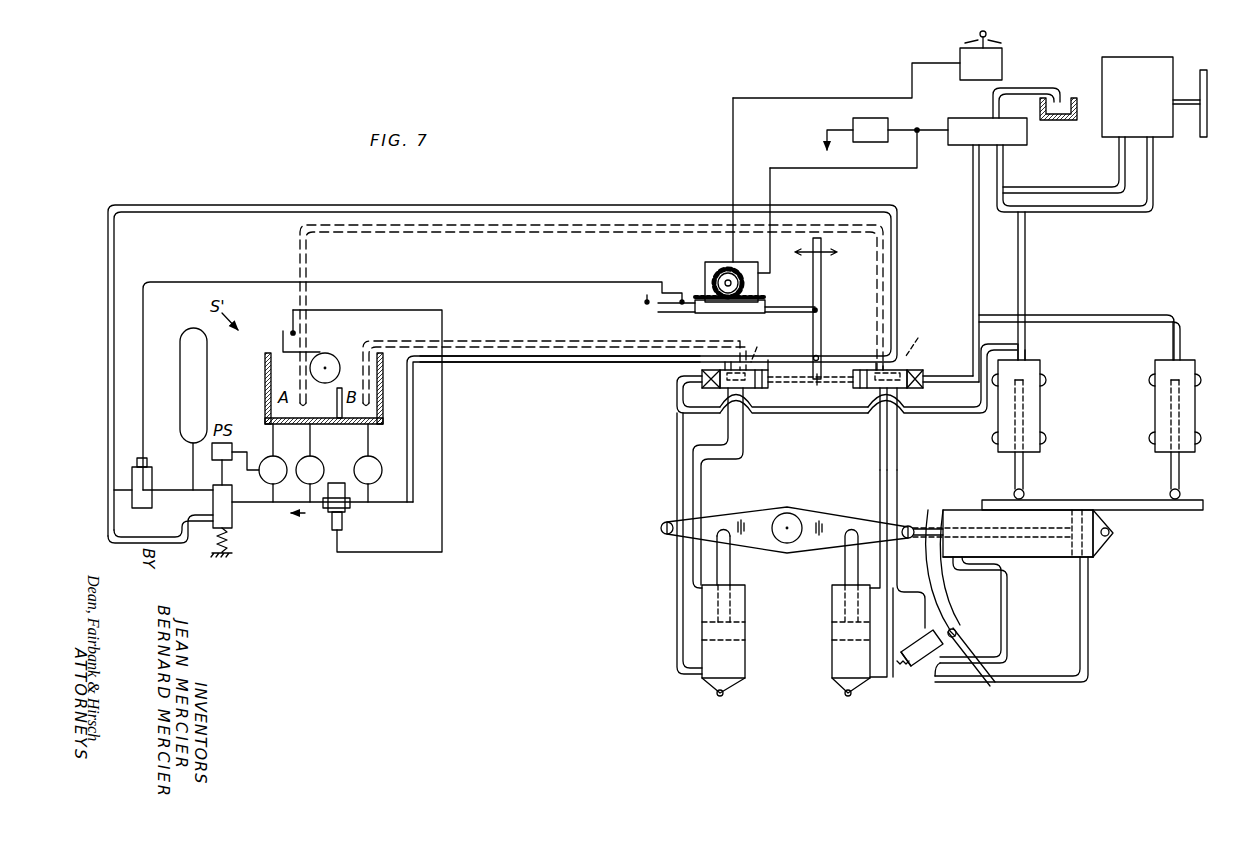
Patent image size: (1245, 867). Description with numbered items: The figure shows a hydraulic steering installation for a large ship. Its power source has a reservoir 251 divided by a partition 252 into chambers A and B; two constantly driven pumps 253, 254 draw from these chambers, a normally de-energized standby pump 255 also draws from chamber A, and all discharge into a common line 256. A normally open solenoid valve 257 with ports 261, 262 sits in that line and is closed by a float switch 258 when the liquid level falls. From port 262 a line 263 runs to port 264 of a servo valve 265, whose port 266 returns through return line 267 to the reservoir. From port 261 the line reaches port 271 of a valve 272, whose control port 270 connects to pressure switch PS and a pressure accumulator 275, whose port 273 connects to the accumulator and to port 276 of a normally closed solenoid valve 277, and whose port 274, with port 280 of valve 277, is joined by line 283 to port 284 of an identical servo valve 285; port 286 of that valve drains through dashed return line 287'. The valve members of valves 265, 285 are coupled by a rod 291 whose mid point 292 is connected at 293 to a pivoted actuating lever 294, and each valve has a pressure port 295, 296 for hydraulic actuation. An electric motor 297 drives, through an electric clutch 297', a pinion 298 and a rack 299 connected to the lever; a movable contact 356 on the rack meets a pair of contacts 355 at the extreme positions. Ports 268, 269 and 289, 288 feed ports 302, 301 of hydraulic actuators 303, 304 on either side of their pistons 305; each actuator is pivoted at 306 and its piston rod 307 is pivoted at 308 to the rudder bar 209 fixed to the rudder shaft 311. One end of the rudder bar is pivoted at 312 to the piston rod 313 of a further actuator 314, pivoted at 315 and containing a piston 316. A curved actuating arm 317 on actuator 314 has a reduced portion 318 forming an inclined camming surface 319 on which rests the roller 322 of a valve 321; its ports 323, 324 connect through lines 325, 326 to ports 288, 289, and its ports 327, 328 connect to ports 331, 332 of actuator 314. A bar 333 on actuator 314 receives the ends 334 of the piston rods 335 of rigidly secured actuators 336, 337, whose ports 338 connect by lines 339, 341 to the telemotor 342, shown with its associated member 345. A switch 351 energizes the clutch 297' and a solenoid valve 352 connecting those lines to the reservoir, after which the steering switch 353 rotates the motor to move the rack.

The line 283 is at (184, 207).
The line 263 is at (546, 364).
The conduit 287' is at (591, 314).
The return line 267 is at (598, 342).
The pair of contacts 355 is at (646, 298).
The movable contact 356 is at (660, 306).
The pressure accumulator 275 is at (183, 342).
The normally closed solenoid valve 277 is at (130, 486).
The port 276 is at (152, 486).
The port 280 is at (130, 500).
The port 274 is at (190, 519).
The port 273 is at (212, 497).
The control port 270 is at (235, 472).
The port 271 is at (232, 506).
The valve 272 is at (217, 522).
The standby pump 255 is at (276, 460).
The pump 253 is at (320, 462).
The pump 254 is at (383, 470).
The common line 256 is at (370, 506).
The reservoir 251 is at (387, 393).
The partition 252 is at (348, 420).
The float switch 258 is at (286, 328).
The normally open solenoid valve 257 is at (337, 545).
The port 262 is at (350, 505).
The port 261 is at (335, 516).
The electric motor 297 is at (707, 270).
The pinion 298 is at (712, 283).
The electric clutch 297' is at (770, 190).
The rack 299 is at (770, 305).
The pivoted actuating lever 294 is at (822, 290).
The connection 293 is at (806, 377).
The mid point 292 is at (823, 376).
The pressure port 295 is at (701, 377).
The port 264 is at (734, 366).
The port 266 is at (755, 339).
The servo valve 265 is at (770, 364).
The port 284 is at (908, 370).
The servo valve 285 is at (873, 366).
The port 286 is at (924, 334).
The pressure port 296 is at (926, 377).
The line 341 is at (972, 257).
The line 339 is at (1026, 277).
The port 338 is at (1027, 352).
The port 268 is at (700, 398).
The rod 291 is at (806, 414).
The port 289 is at (906, 400).
The port 269 is at (758, 391).
The port 288 is at (884, 400).
The line 325 is at (879, 481).
The line 326 is at (898, 470).
The port 301 is at (695, 598).
The hydraulic actuator 303 is at (750, 630).
The piston 305 is at (727, 633).
The piston rod 307 is at (732, 568).
The pivot 308 is at (723, 529).
The port 302 is at (703, 680).
The pivot 306 is at (720, 697).
The hydraulic actuator 304 is at (828, 644).
The rocker 209 is at (809, 517).
The rudder shaft 311 is at (784, 517).
The pivot 312 is at (909, 526).
The piston rod 313 is at (950, 522).
The piston 316 is at (1078, 510).
The pivot 315 is at (1112, 535).
The port 332 is at (1095, 558).
The hydraulic actuator 314 is at (1055, 560).
The bar 333 is at (1042, 501).
The hydraulic actuator 336 is at (1042, 411).
The hydraulic actuator 337 is at (1153, 411).
The piston rod ends 334 is at (1014, 492).
The piston rods 335 is at (1178, 471).
The port 331 is at (960, 556).
The reduced portion 318 is at (1002, 650).
The curved actuating arm 317 is at (946, 586).
The inclined camming surface 319 is at (956, 630).
The roller 322 is at (957, 636).
The port 323 is at (925, 631).
The port 324 is at (905, 645).
The valve 321 is at (918, 672).
The port 328 is at (935, 679).
The port 327 is at (980, 686).
The steering switch 353 is at (1005, 63).
The switch 351 is at (852, 125).
The solenoid valve 352 is at (970, 137).
The telemotor 342 is at (1160, 76).
The lever 345 is at (1203, 132).